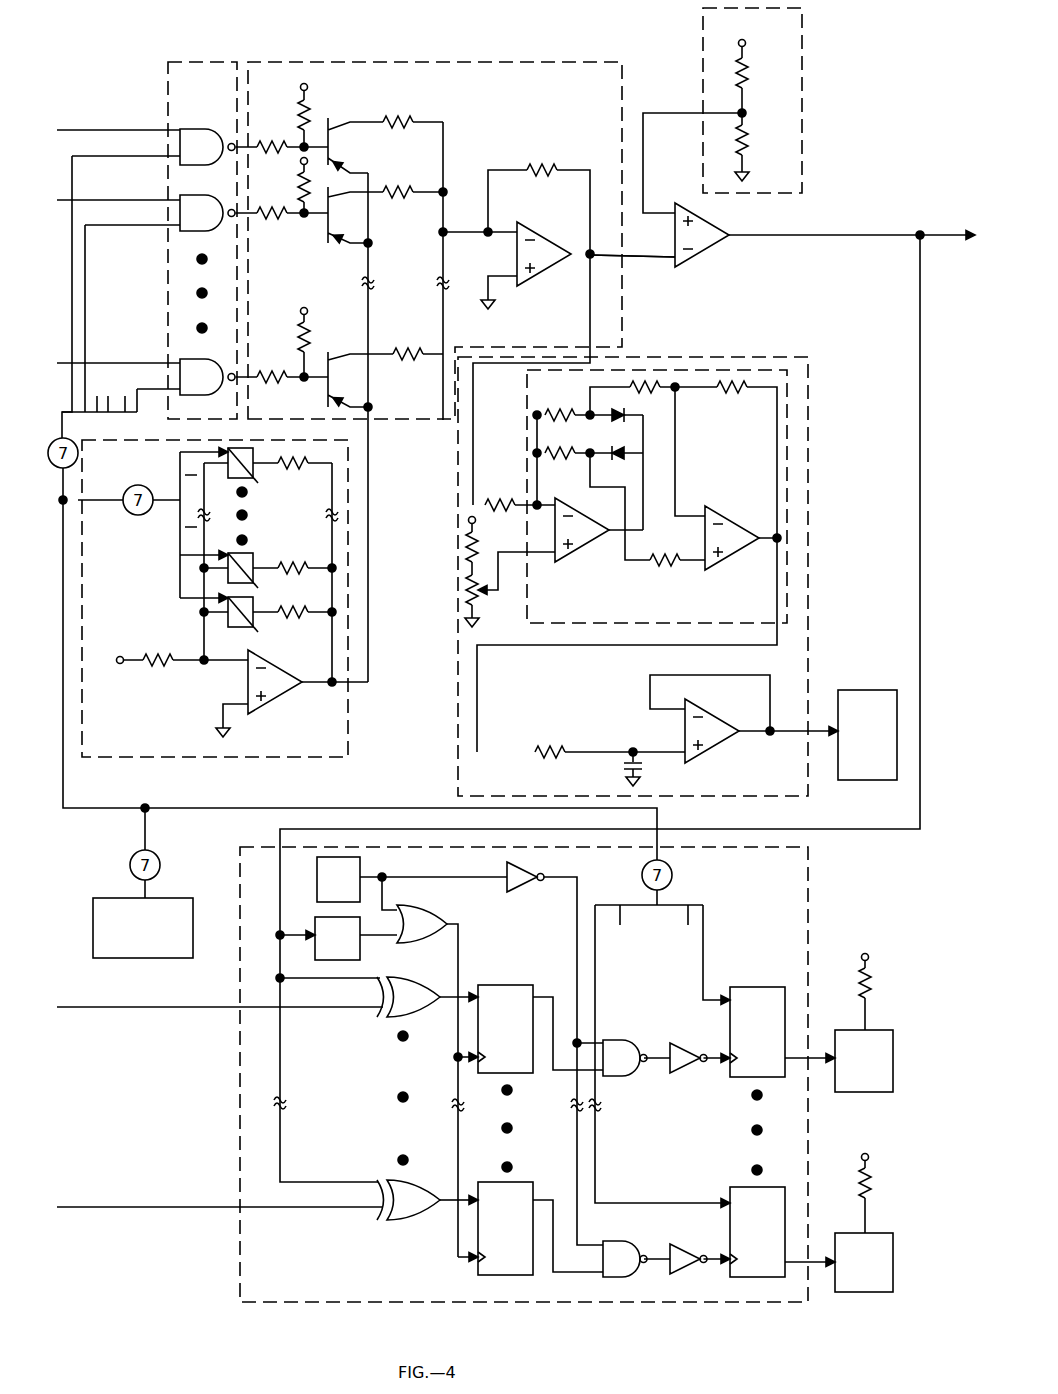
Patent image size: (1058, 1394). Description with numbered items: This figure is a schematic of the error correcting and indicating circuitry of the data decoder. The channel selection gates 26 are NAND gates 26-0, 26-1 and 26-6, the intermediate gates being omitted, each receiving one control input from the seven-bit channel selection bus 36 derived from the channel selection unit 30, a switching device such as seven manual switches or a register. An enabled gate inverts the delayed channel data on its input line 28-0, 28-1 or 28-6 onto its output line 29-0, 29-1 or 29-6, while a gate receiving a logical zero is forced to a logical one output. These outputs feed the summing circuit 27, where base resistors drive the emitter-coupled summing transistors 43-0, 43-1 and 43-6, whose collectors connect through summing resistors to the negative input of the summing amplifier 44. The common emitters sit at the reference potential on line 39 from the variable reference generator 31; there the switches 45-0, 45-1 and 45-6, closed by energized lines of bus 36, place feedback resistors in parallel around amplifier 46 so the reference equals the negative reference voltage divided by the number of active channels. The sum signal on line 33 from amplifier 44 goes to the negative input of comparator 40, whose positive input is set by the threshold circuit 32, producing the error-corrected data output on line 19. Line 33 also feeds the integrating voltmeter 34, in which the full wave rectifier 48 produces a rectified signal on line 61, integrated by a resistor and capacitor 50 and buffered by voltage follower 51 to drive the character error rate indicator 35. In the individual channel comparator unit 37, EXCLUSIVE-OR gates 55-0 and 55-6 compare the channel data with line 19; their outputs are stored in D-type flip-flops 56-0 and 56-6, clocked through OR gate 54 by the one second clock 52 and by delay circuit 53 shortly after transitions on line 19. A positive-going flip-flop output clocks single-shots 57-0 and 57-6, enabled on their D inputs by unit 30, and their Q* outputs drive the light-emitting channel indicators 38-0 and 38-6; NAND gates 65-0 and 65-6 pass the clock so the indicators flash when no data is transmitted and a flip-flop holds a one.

The channel selection gates 26 is at (190, 62).
The NAND gate 26-0 is at (190, 128).
The NAND gate 26-1 is at (188, 195).
The NAND gate 26-6 is at (226, 347).
The summing circuit 27 is at (403, 62).
The input line 28-0 is at (88, 130).
The input line 28-1 is at (90, 200).
The input line 28-6 is at (100, 363).
The output line 29-0 is at (247, 133).
The output line 29-1 is at (247, 210).
The output line 29-6 is at (248, 367).
The summing transistor 43-0 is at (340, 116).
The summing transistor 43-1 is at (321, 235).
The summing transistor 43-6 is at (350, 336).
The summing amplifier 44 is at (530, 236).
The threshold circuit 32 is at (802, 67).
The comparator 40 is at (708, 240).
The sum signal line 33 is at (650, 257).
The output line 19 is at (876, 858).
The variable reference generator 31 is at (348, 748).
The reference output line 39 is at (368, 553).
The switch 45-6 is at (257, 482).
The switch 45-1 is at (250, 550).
The switch 45-0 is at (256, 620).
The amplifier 46 is at (268, 700).
The channel selection bus 36 is at (195, 808).
The channel selection unit 30 is at (175, 905).
The integrating voltmeter 34 is at (808, 500).
The full wave rectifier 48 is at (787, 437).
The rectified signal line 61 is at (777, 448).
The voltage follower 51 is at (712, 745).
The capacitor 50 is at (645, 769).
The character error rate indicator 35 is at (878, 780).
The individual channel comparator unit 37 is at (288, 1300).
The one second clock 52 is at (355, 866).
The delay circuit 53 is at (357, 951).
The OR gate 54 is at (430, 918).
The EXCLUSIVE-OR gate 55-0 is at (400, 988).
The EXCLUSIVE-OR gate 55-6 is at (408, 1185).
The D-type flip-flop 56-0 is at (500, 990).
The D-type flip-flop 56-6 is at (490, 1187).
The single-shot 57-0 is at (730, 1023).
The single-shot 57-6 is at (728, 1236).
The NAND gate 65-0 is at (625, 1070).
The NAND gate 65-6 is at (628, 1272).
The channel indicator 38-0 is at (885, 1066).
The channel indicator 38-6 is at (883, 1271).